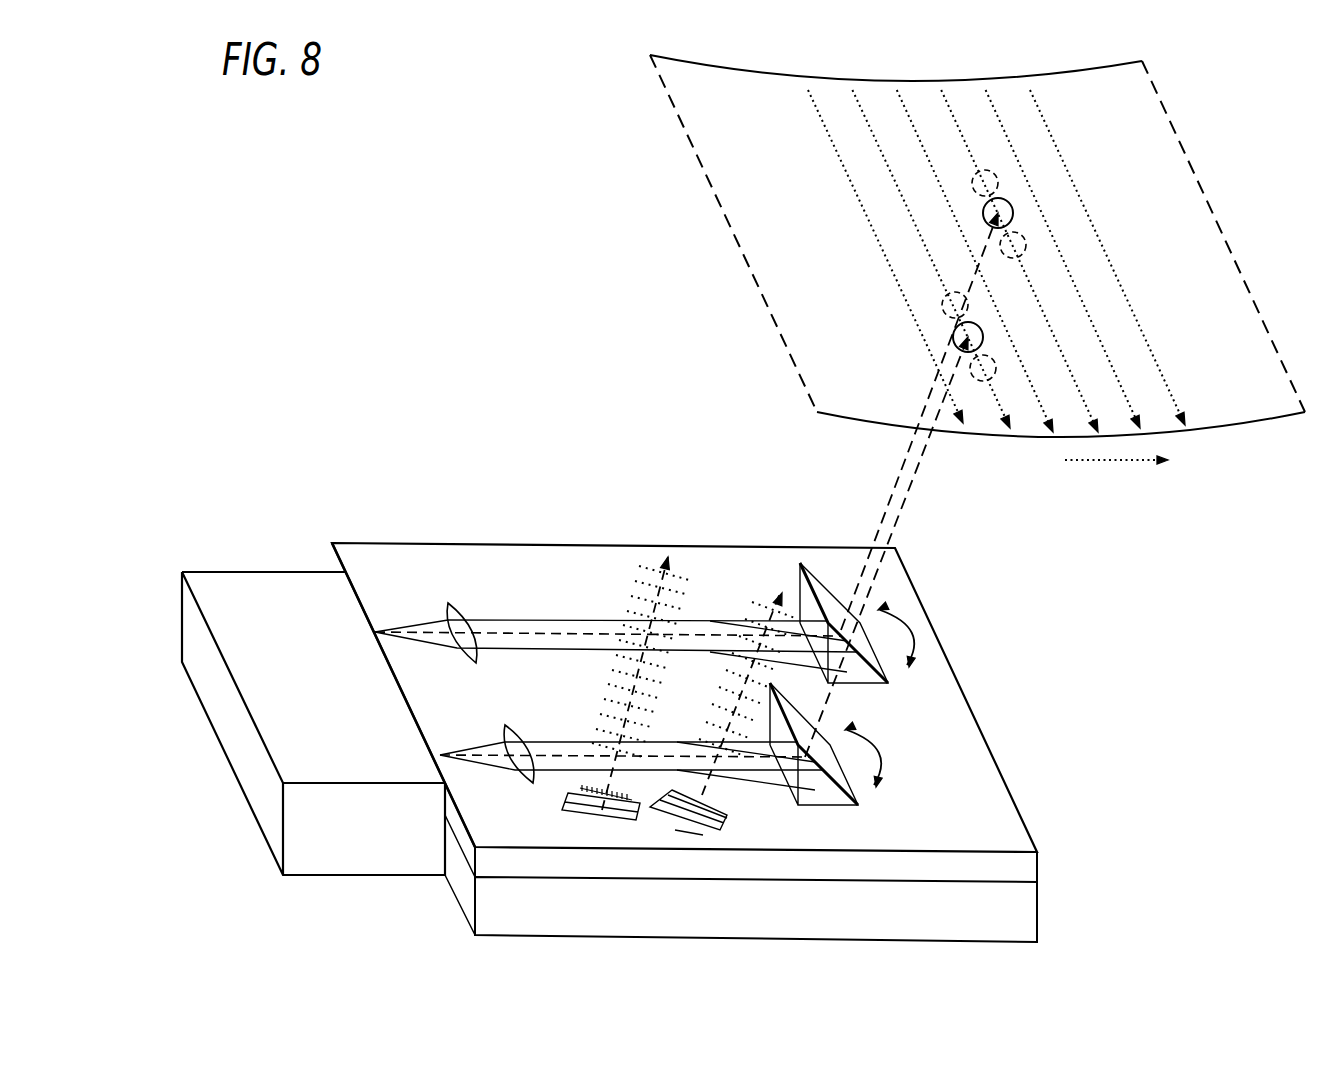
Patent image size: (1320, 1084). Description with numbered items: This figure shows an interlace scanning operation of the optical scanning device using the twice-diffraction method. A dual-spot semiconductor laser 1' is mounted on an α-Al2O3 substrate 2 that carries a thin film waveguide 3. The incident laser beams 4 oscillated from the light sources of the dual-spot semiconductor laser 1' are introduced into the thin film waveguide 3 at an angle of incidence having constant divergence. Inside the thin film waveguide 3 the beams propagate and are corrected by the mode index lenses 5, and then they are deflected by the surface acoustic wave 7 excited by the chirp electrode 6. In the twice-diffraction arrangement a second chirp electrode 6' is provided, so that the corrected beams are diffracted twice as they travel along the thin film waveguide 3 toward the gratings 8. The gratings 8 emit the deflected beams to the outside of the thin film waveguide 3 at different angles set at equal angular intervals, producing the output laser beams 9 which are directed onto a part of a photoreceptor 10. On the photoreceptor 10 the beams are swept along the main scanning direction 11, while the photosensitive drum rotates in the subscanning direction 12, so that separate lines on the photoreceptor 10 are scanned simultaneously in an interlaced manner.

The dual-spot semiconductor laser 1' is at (313, 723).
The α-Al2O3 substrate 2 is at (741, 878).
The thin film waveguide 3 is at (684, 712).
The incident laser beams 4 is at (490, 701).
The mode index lenses 5 is at (616, 722).
The chirp electrode 6 is at (625, 700).
The second chirp electrode 6' is at (718, 718).
The surface acoustic wave 7 is at (762, 646).
The gratings 8 is at (842, 699).
The output laser beams 9 is at (913, 488).
The part of a photoreceptor 10 is at (977, 246).
The main scanning direction 11 is at (996, 261).
The subscanning direction 12 is at (1145, 461).